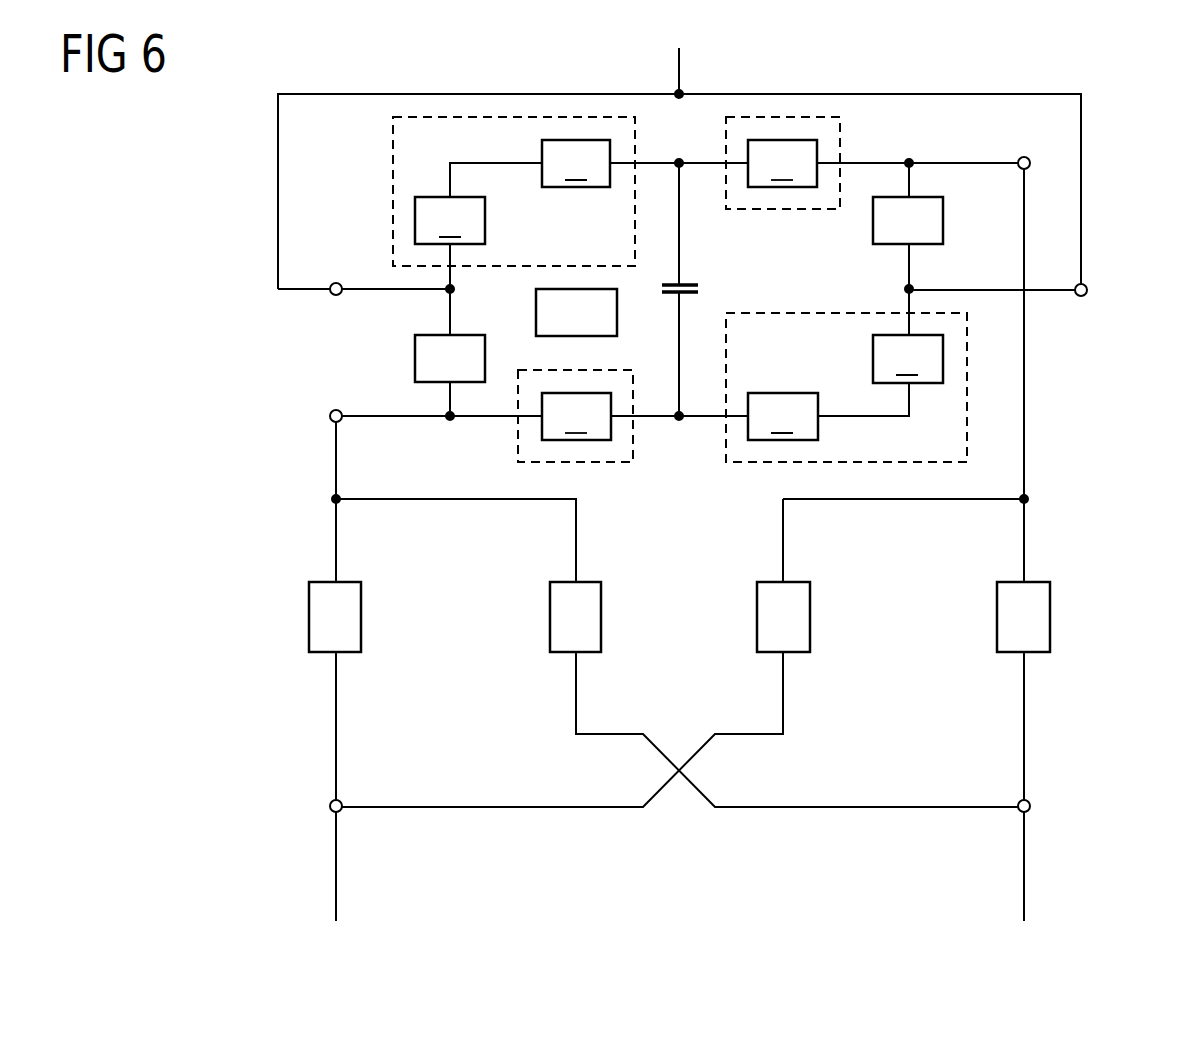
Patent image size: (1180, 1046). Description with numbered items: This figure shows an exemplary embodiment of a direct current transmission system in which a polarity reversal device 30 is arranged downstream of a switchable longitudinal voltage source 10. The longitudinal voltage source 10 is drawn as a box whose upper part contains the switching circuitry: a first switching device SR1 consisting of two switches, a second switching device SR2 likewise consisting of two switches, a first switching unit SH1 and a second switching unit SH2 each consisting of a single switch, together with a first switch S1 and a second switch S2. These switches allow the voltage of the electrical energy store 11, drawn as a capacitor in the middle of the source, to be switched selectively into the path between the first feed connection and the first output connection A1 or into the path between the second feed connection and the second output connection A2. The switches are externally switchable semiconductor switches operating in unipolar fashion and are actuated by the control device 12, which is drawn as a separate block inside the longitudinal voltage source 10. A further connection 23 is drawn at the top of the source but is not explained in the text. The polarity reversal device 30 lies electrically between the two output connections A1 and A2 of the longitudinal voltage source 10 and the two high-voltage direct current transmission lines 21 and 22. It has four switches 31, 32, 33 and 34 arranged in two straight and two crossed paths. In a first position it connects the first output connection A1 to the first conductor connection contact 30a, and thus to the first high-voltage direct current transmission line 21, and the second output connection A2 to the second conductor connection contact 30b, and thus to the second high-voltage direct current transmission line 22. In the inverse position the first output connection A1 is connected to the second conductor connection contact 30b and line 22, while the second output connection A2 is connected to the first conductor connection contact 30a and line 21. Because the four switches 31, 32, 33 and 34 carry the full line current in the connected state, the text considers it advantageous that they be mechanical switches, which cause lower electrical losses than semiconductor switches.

The longitudinal voltage source 10 is at (365, 336).
The electrical energy store 11 is at (700, 290).
The control device 12 is at (591, 329).
The first high-voltage direct current transmission line 21 is at (334, 895).
The second high-voltage direct current transmission line 22 is at (1026, 896).
The supply terminal 23 is at (508, 94).
The polarity reversal device 30 is at (283, 549).
The first conductor connection contact 30a is at (329, 806).
The second conductor connection contact 30b is at (1031, 806).
The switch 31 is at (351, 633).
The switch 32 is at (592, 633).
The switch 33 is at (799, 633).
The switch 34 is at (1039, 633).
The first output connection A1 is at (330, 417).
The second output connection A2 is at (1030, 161).
The first switch S1 is at (468, 375).
The second switch S2 is at (926, 237).
The first switching device SR1 is at (393, 133).
The second switching device SR2 is at (742, 463).
The first switching unit SH1 is at (615, 463).
The second switching unit SH2 is at (840, 133).